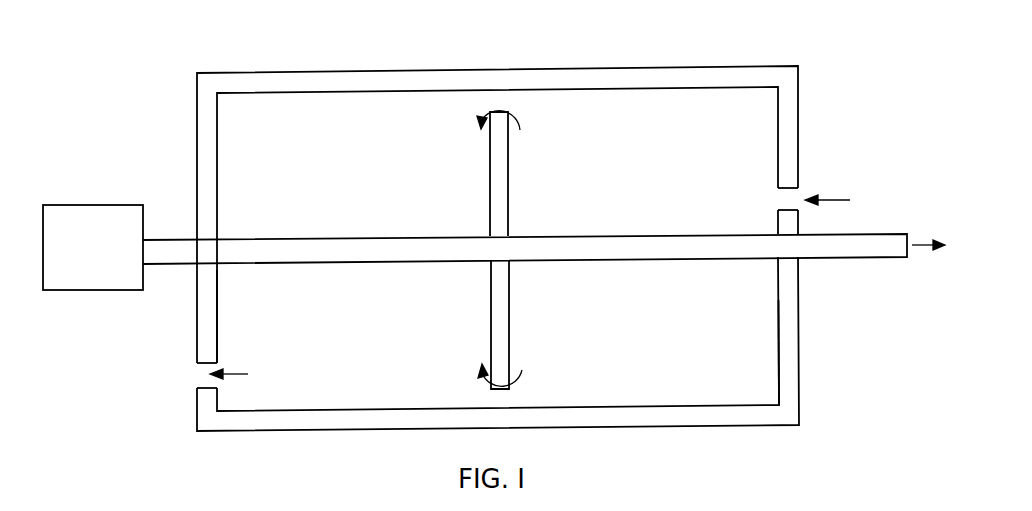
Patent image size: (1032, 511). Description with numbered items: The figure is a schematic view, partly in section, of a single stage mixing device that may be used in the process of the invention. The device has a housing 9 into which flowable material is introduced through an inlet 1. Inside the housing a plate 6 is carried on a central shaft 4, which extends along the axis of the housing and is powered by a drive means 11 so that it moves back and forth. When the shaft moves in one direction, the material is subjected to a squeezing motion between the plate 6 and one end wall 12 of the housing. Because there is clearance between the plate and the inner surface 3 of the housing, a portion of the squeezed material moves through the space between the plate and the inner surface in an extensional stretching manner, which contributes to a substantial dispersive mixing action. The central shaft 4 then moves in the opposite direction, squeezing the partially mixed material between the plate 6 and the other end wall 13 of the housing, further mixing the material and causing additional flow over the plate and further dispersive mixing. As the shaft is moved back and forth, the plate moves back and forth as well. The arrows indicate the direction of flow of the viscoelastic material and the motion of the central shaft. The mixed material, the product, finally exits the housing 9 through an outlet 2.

The inlet 1 is at (790, 197).
The outlet 2 is at (198, 373).
The inner surface 3 is at (625, 89).
The central shaft 4 is at (822, 258).
The plate 6 is at (510, 326).
The housing 9 is at (585, 68).
The drive means 11 is at (90, 205).
The end wall 12 is at (779, 345).
The end wall 13 is at (218, 310).